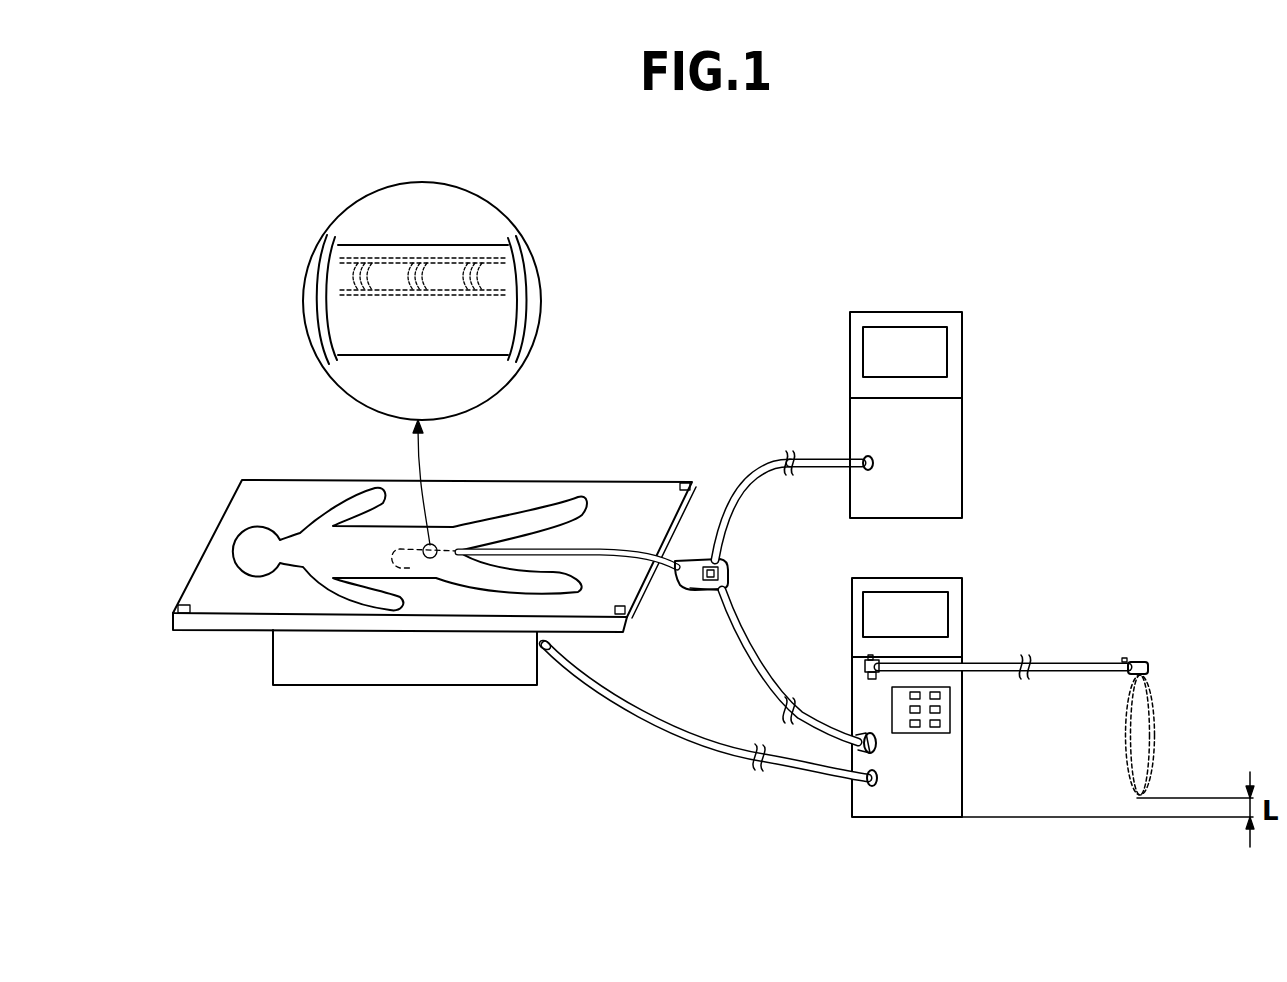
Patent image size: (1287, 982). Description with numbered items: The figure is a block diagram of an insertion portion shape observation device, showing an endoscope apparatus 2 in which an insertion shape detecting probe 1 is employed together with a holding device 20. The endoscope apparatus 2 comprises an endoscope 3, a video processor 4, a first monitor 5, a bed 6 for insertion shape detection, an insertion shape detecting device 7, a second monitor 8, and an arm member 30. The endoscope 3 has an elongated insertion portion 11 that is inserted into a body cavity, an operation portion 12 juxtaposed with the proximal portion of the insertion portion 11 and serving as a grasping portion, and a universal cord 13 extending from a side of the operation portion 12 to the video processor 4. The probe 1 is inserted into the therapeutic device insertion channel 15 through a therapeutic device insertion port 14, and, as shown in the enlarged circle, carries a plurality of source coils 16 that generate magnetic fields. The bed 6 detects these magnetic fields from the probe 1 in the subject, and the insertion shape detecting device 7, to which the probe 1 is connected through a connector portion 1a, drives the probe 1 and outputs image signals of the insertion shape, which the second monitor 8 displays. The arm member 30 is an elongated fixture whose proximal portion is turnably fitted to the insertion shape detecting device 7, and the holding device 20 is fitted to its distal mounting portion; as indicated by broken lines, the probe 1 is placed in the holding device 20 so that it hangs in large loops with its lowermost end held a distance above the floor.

The insertion shape detecting probe 1 is at (447, 268).
The connector portion 1a is at (862, 737).
The endoscope apparatus 2 is at (678, 360).
The endoscope 3 is at (705, 536).
The video processor 4 is at (878, 415).
The first monitor 5 is at (855, 330).
The bed 6 is at (258, 490).
The insertion shape detecting device 7 is at (1021, 737).
The second monitor 8 is at (855, 600).
The insertion portion 11 is at (615, 548).
The operation portion 12 is at (688, 562).
The universal cord 13 is at (772, 461).
The therapeutic device insertion port 14 is at (701, 593).
The therapeutic device insertion channel 15 is at (420, 258).
The source coils 16 is at (425, 292).
The holding device 20 is at (1143, 661).
The arm member 30 is at (1067, 662).